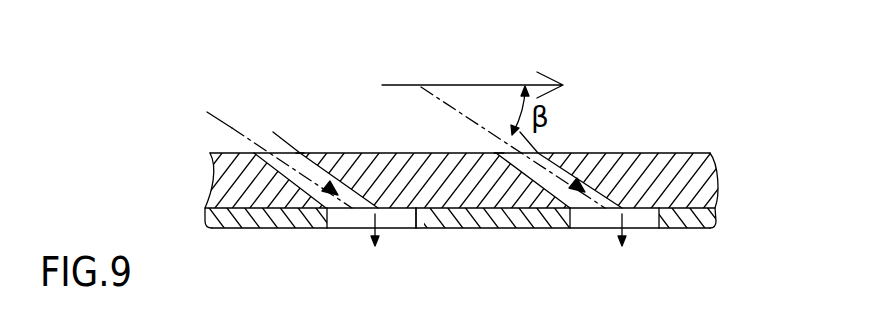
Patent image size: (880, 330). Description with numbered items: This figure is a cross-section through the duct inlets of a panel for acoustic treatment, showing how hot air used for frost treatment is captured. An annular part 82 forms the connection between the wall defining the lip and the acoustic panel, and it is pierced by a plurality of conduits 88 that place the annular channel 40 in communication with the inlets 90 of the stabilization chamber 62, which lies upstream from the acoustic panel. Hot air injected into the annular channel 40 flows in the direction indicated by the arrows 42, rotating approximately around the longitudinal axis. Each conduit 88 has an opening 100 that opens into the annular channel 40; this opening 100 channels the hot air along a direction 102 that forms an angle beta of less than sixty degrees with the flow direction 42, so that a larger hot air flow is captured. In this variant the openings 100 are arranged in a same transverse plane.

The annular channel 40 is at (454, 140).
The hot air flow direction arrows 42 is at (481, 85).
The stabilization chamber 62 is at (465, 240).
The annular part 82 is at (407, 179).
The conduit 88 is at (257, 155).
The inlet 90 is at (338, 218).
The opening 100 is at (504, 156).
The hot air channeling direction 102 is at (447, 103).